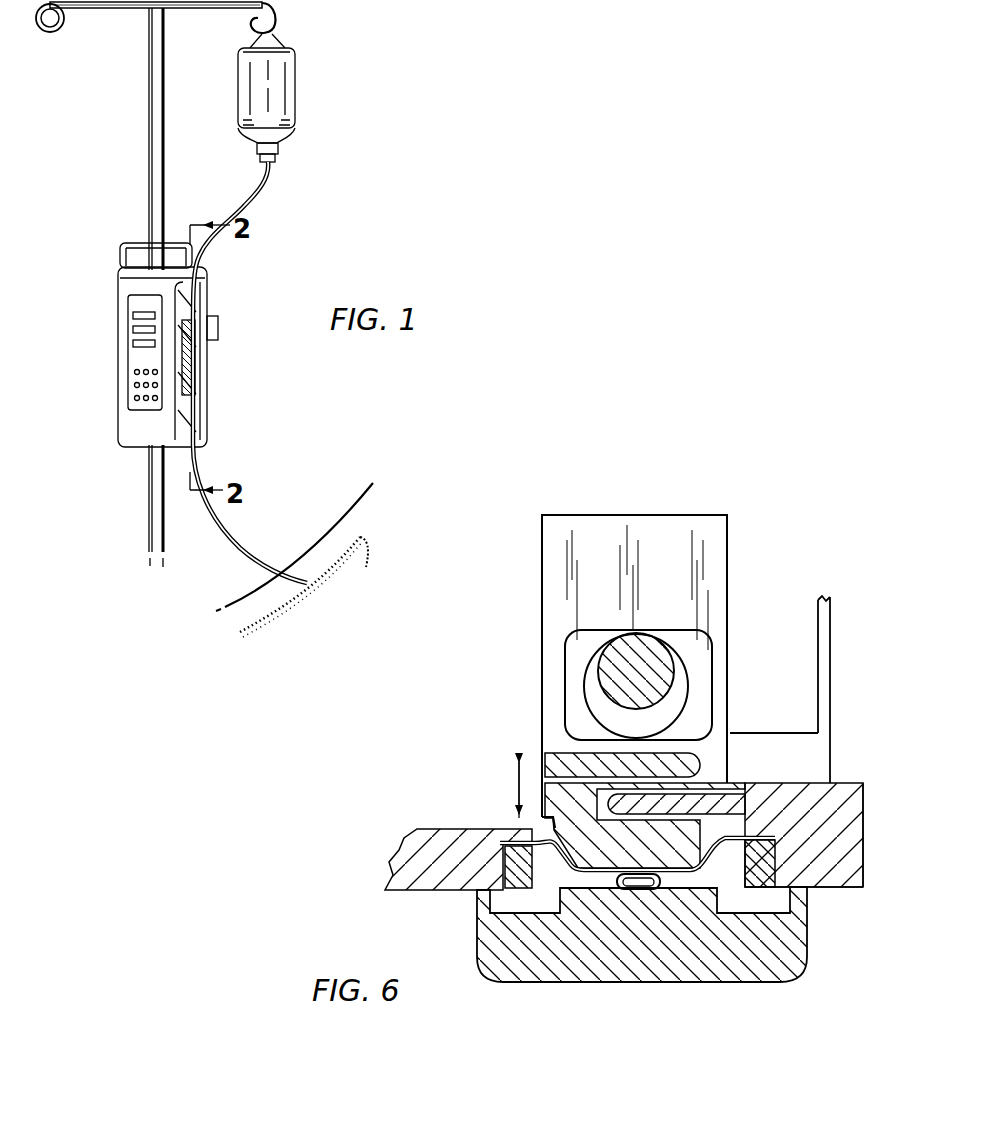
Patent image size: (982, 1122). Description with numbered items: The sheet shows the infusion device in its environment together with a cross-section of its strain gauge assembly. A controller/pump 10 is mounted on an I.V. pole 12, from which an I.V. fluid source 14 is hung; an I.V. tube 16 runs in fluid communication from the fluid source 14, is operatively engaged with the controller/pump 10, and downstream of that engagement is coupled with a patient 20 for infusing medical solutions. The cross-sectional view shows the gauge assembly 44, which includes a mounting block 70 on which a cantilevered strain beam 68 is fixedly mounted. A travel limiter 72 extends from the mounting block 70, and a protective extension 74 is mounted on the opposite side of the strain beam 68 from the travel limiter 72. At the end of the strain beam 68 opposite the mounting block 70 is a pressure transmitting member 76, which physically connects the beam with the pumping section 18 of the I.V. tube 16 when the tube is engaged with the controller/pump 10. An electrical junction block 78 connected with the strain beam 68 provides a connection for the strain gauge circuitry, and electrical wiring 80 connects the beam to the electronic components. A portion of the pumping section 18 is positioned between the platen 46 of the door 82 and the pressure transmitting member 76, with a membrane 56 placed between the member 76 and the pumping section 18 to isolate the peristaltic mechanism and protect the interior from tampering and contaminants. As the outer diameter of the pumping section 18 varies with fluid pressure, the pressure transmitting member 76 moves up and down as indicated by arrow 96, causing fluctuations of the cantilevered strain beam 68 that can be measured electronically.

In FIG. 1, the controller/pump 10 is at (228, 330).
In FIG. 1, the I.V. pole 12 is at (150, 155).
In FIG. 1, the I.V. fluid source 14 is at (287, 85).
In FIG. 1, the I.V. tube 16 is at (253, 196).
In FIG. 1, the pumping section 18 is at (194, 388).
In FIG. 6, the pumping section 18 is at (677, 883).
In FIG. 1, the patient 20 is at (408, 490).
In FIG. 6, the gauge assembly 44 is at (874, 808).
In FIG. 6, the platen 46 is at (605, 880).
In FIG. 6, the membrane 56 is at (477, 912).
In FIG. 6, the cantilevered strain beam 68 is at (842, 782).
In FIG. 6, the mounting block 70 is at (855, 855).
In FIG. 6, the travel limiter 72 is at (700, 766).
In FIG. 6, the protective extension 74 is at (557, 752).
In FIG. 6, the pressure transmitting member 76 is at (556, 820).
In FIG. 6, the electrical junction block 78 is at (797, 708).
In FIG. 6, the electrical wiring 80 is at (832, 642).
In FIG. 6, the door 82 is at (607, 967).
In FIG. 6, the arrow 96 is at (517, 790).